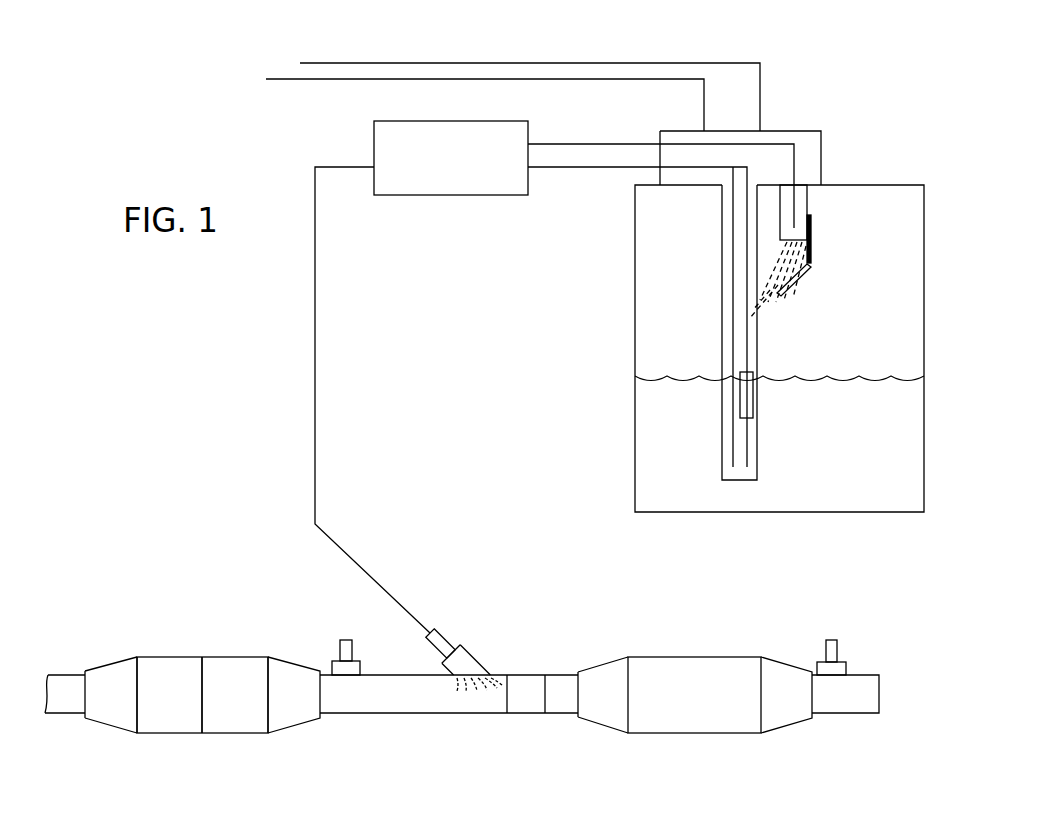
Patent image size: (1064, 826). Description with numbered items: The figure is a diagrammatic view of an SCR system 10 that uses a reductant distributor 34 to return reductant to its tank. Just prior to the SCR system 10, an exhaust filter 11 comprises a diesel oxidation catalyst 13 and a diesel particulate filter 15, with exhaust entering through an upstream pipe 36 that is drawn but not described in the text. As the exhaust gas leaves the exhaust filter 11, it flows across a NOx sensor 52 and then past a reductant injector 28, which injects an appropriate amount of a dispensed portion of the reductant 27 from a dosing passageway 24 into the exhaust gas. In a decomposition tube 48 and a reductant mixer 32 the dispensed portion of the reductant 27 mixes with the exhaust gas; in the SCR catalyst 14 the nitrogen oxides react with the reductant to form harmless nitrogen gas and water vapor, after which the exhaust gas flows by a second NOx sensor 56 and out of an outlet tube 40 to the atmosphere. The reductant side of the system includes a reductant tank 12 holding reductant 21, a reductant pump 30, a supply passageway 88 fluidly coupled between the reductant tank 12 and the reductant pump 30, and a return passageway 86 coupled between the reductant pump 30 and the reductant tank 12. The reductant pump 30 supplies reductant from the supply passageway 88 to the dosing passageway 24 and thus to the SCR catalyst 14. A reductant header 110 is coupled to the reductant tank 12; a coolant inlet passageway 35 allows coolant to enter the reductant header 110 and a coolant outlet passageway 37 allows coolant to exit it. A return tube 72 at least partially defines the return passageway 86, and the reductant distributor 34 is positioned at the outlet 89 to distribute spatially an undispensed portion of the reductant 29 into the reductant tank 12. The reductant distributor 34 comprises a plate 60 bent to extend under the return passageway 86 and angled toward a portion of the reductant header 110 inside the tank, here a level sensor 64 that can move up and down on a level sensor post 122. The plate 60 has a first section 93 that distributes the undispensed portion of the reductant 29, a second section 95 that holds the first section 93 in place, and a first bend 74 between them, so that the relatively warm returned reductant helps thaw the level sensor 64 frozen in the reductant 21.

The SCR system 10 is at (972, 520).
The exhaust filter 11 is at (198, 752).
The reductant tank 12 is at (924, 280).
The diesel oxidation catalyst 13 is at (168, 657).
The SCR catalyst 14 is at (670, 733).
The diesel particulate filter 15 is at (248, 657).
The reductant 21 is at (667, 367).
The dosing passageway 24 is at (315, 390).
The dispensed portion of the reductant 27 is at (470, 698).
The reductant injector 28 is at (445, 637).
The undispensed portion of the reductant 29 is at (763, 287).
The reductant pump 30 is at (374, 145).
The reductant mixer 32 is at (523, 713).
The reductant distributor 34 is at (832, 266).
The coolant inlet passageway 35 is at (605, 79).
The inlet exhaust pipe 36 is at (60, 713).
The coolant outlet passageway 37 is at (605, 63).
The outlet tube 40 is at (872, 673).
The decomposition tube 48 is at (392, 713).
The NOx sensor 52 is at (337, 650).
The second NOx sensor 56 is at (825, 648).
The plate 60 is at (799, 295).
The level sensor 64 is at (753, 395).
The return tube 72 is at (807, 197).
The first bend 74 is at (808, 272).
The return passageway 86 is at (585, 144).
The supply passageway 88 is at (625, 167).
The outlet 89 is at (778, 280).
The first section 93 is at (784, 300).
The second section 95 is at (816, 248).
The reductant header 110 is at (845, 112).
The level sensor post 122 is at (747, 432).